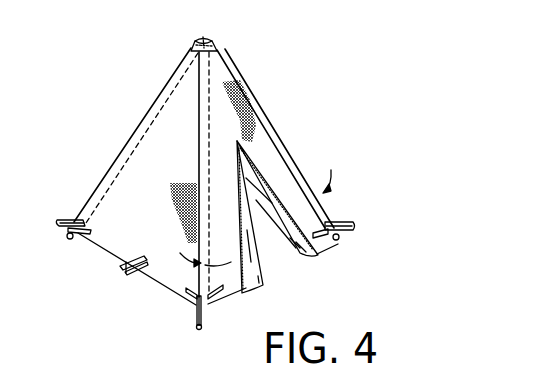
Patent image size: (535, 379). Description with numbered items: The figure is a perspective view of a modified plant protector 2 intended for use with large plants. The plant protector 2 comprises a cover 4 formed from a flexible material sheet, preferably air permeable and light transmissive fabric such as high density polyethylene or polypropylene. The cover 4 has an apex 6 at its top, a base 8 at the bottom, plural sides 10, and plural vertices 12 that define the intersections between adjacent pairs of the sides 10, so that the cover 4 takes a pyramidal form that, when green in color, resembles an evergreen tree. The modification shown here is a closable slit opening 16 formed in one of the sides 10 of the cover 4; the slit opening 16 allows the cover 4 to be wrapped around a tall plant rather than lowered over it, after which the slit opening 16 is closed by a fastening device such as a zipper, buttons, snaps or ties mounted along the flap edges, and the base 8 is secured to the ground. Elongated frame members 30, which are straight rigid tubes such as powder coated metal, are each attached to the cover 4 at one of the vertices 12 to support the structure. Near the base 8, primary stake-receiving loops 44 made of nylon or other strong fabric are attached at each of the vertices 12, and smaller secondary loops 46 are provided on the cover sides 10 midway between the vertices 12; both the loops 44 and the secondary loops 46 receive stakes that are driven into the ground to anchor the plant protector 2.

The plant protector 2 is at (120, 98).
The cover 4 is at (182, 139).
The apex 6 is at (213, 42).
The base 8 is at (110, 262).
The sides 10 is at (127, 182).
The vertices 12 is at (128, 133).
The slit opening 16 is at (258, 263).
The frame members 30 is at (66, 252).
The stake-receiving loops 44 is at (58, 221).
The secondary loops 46 is at (132, 277).